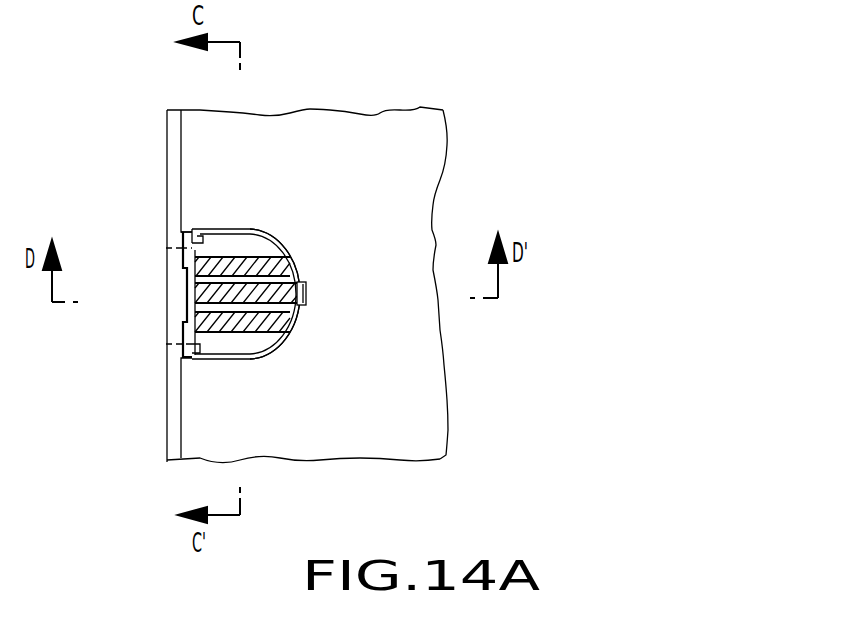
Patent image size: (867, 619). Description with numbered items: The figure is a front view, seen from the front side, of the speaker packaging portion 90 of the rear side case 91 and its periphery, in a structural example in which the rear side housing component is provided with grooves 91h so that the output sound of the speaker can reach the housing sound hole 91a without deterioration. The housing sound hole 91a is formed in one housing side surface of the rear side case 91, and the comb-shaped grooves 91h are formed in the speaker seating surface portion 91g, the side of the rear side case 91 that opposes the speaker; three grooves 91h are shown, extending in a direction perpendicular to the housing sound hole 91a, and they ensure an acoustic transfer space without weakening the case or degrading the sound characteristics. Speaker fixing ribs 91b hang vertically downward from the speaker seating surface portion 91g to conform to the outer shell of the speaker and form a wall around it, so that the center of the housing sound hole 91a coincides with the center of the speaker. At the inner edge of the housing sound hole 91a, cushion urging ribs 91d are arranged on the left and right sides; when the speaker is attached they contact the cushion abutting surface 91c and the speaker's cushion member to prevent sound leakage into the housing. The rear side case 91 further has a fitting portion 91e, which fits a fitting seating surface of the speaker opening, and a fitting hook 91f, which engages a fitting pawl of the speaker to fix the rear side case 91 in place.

The speaker packaging portion 90 is at (215, 345).
The rear side case 91 is at (395, 120).
The housing sound hole 91a is at (173, 255).
The speaker fixing ribs 91b is at (283, 239).
The cushion abutting surface 91c is at (187, 328).
The cushion urging ribs 91d is at (207, 238).
The fitting portion 91e is at (183, 287).
The fitting hook 91f is at (308, 292).
The speaker seating surface portion 91g is at (239, 342).
The grooves 91h is at (258, 265).